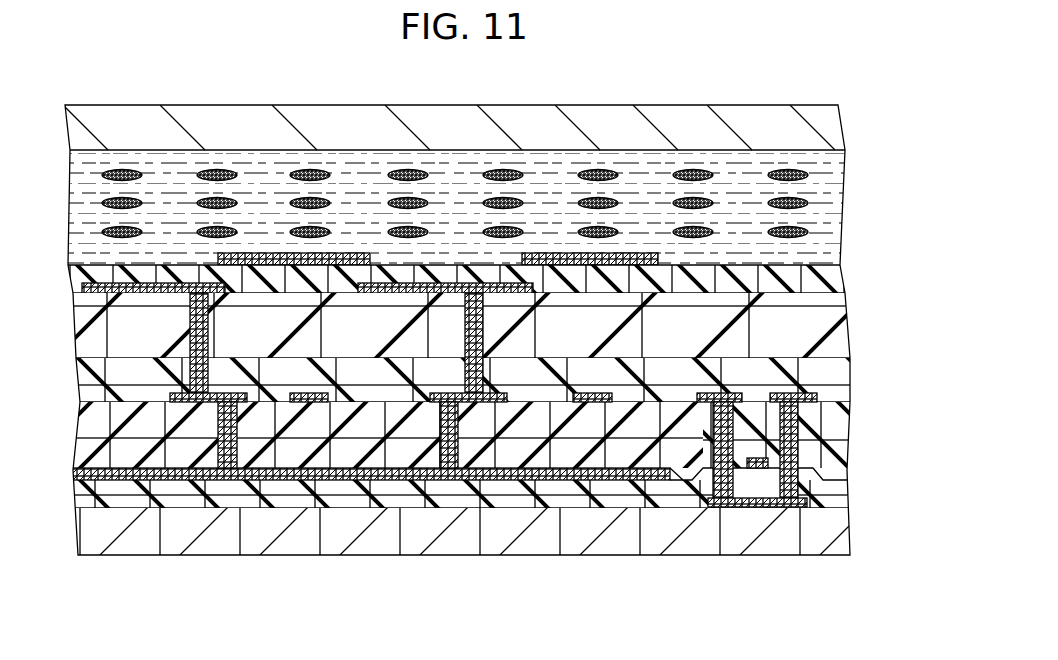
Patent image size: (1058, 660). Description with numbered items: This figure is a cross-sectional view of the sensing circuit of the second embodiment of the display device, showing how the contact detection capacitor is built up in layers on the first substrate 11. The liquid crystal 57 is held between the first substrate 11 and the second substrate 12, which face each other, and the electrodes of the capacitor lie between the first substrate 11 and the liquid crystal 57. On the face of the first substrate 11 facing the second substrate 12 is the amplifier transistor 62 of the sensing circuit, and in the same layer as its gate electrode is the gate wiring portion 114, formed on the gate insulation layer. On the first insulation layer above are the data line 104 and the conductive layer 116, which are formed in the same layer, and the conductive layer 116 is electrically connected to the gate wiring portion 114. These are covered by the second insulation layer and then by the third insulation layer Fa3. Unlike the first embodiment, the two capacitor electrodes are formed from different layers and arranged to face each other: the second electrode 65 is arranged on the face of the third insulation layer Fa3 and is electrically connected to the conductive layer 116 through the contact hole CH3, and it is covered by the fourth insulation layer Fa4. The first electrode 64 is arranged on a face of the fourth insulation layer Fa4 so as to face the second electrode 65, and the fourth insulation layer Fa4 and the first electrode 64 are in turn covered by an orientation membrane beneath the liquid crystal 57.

The first substrate 11 is at (835, 518).
The second substrate 12 is at (832, 122).
The liquid crystal 57 is at (835, 188).
The amplifier transistor 62 is at (769, 516).
The first electrode 64 is at (268, 256).
The second electrode 65 is at (163, 288).
The data line 104 is at (300, 395).
The gate wiring portion 114 is at (333, 481).
The conductive layer 116 is at (186, 394).
The contact hole CH3 is at (212, 311).
The third insulation layer Fa3 is at (830, 308).
The fourth insulation layer Fa4 is at (830, 278).